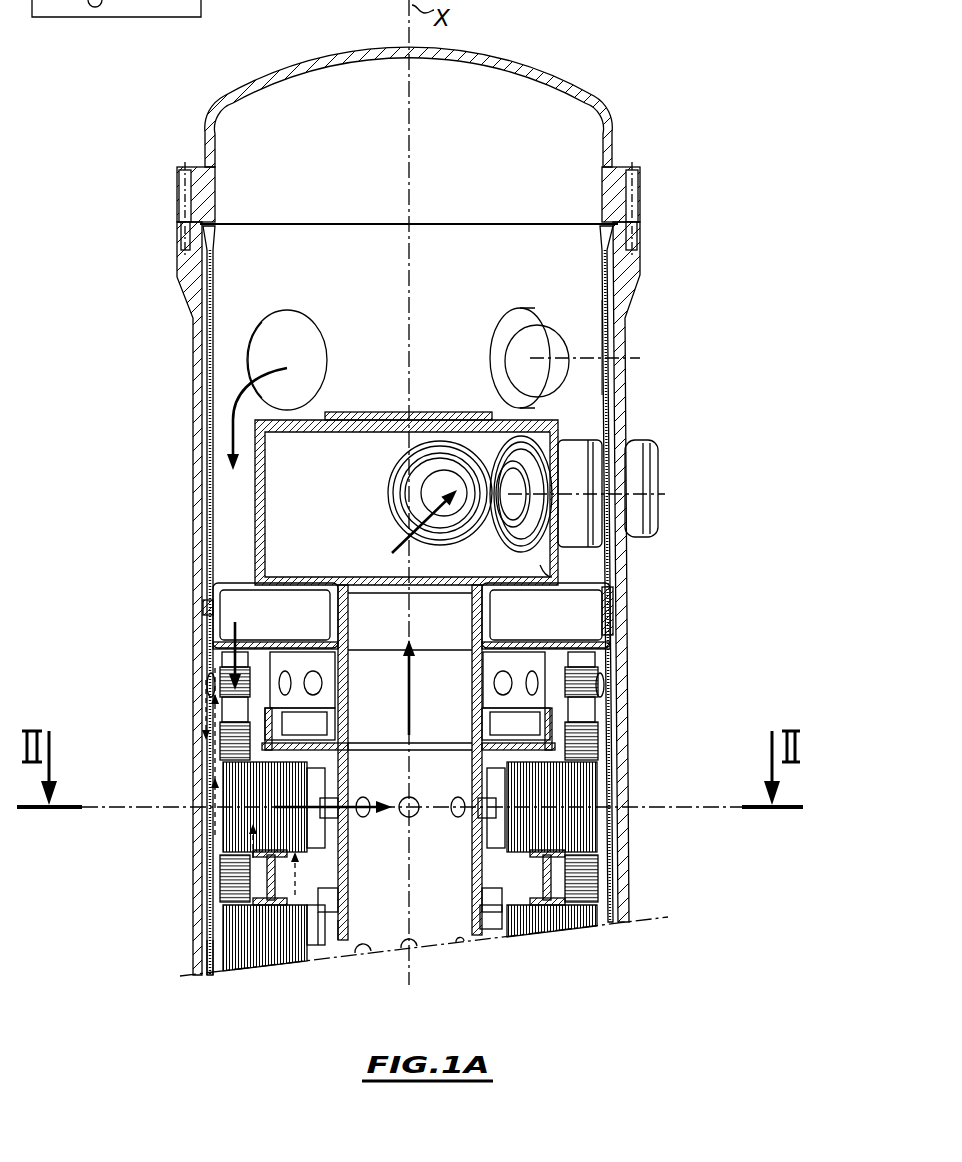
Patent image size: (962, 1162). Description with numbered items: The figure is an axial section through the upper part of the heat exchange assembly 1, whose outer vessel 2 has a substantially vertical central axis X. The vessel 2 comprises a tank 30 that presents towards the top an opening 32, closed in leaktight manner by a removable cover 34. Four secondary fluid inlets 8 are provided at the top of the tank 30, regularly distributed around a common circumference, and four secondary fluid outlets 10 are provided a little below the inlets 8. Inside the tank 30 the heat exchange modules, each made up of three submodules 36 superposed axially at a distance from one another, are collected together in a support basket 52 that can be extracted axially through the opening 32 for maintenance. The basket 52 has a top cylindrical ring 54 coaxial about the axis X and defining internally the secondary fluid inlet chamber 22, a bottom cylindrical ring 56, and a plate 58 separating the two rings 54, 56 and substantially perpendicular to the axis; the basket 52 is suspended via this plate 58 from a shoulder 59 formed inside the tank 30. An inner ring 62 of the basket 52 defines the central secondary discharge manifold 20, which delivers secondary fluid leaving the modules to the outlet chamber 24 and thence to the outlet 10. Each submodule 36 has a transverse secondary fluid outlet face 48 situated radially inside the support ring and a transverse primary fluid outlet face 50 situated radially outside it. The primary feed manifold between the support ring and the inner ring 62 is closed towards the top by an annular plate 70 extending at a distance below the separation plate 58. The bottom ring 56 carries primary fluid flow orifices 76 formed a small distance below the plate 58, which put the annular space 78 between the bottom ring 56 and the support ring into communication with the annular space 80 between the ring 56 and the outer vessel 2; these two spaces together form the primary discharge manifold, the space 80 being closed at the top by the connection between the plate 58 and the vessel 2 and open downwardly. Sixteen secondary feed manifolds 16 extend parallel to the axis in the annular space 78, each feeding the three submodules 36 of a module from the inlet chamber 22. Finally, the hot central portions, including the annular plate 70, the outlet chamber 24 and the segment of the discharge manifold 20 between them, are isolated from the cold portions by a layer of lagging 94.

The heat exchange assembly 1 is at (716, 345).
The outer vessel 2 is at (172, 665).
The secondary fluid inlet 8 is at (552, 344).
The secondary fluid outlet 10 is at (652, 497).
The secondary feed manifold 16 is at (585, 708).
The central manifold 20 is at (470, 868).
The inlet chamber 22 is at (600, 414).
The outlet chamber 24 is at (560, 575).
The tank 30 is at (170, 362).
The opening 32 is at (632, 250).
The removable cover 34 is at (600, 105).
The submodule 36 is at (577, 775).
The transverse secondary fluid outlet face 48 is at (222, 932).
The transverse primary fluid outlet face 50 is at (317, 907).
The support basket 52 is at (230, 487).
The top cylindrical ring 54 is at (213, 427).
The bottom cylindrical ring 56 is at (207, 955).
The plate 58 is at (282, 642).
The shoulder 59 is at (613, 610).
The inner ring 62 is at (347, 922).
The annular plate 70 is at (302, 737).
The primary fluid flow orifice 76 is at (198, 677).
The annular space 78 is at (217, 878).
The annular space 80 is at (207, 765).
The lagging 94 is at (262, 515).